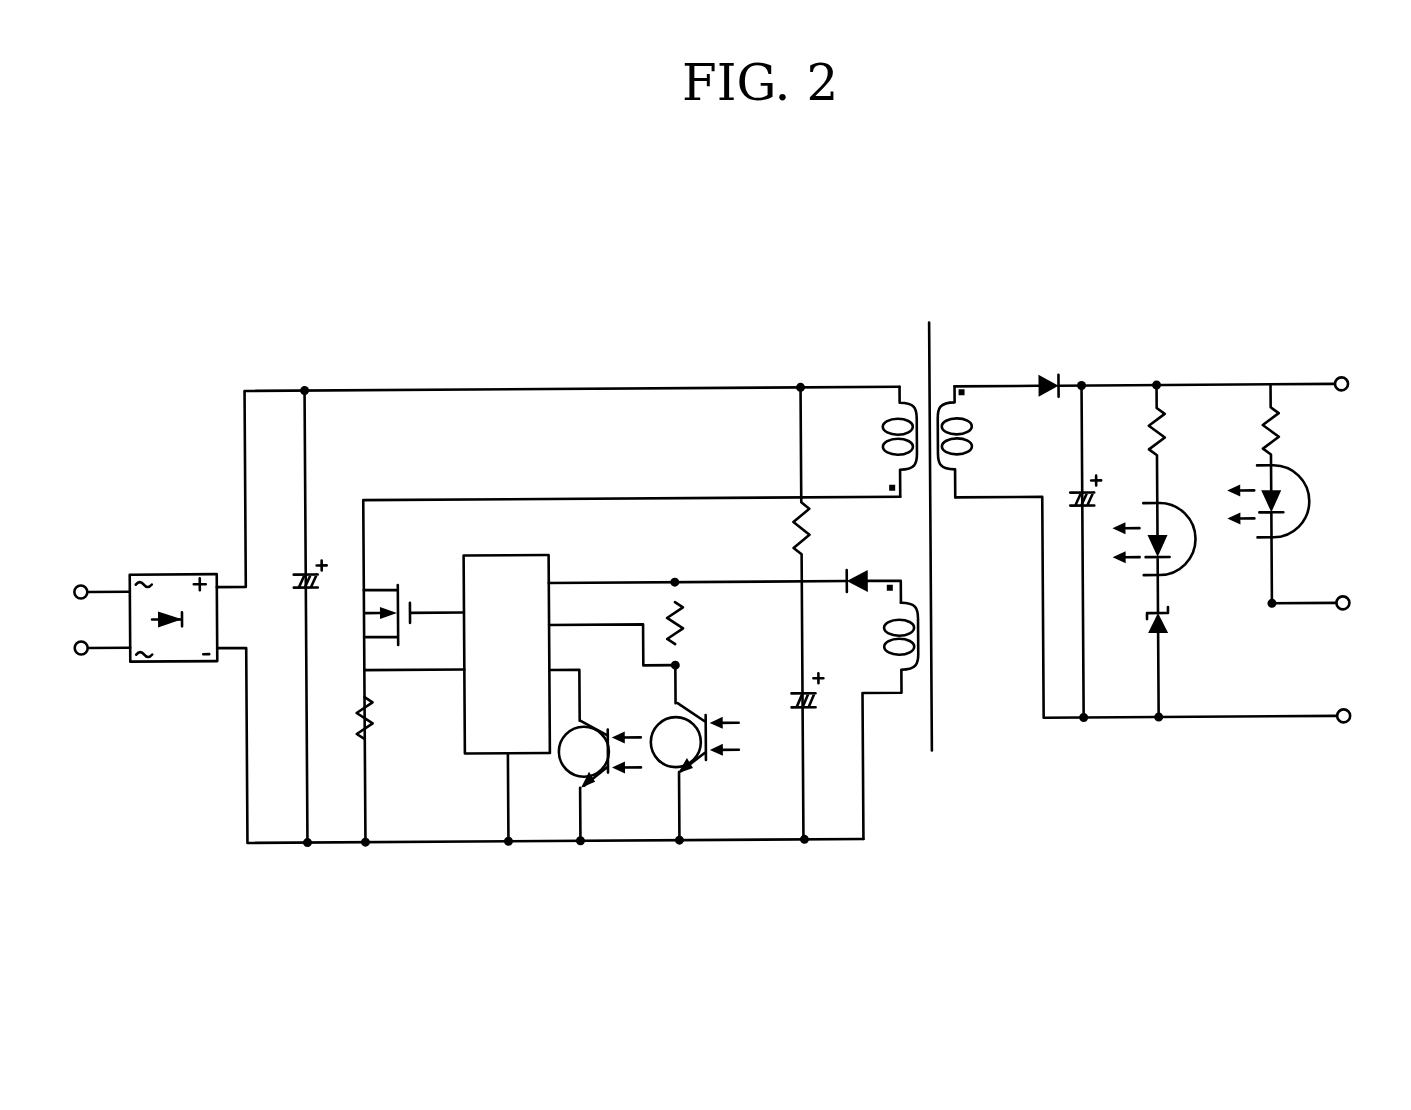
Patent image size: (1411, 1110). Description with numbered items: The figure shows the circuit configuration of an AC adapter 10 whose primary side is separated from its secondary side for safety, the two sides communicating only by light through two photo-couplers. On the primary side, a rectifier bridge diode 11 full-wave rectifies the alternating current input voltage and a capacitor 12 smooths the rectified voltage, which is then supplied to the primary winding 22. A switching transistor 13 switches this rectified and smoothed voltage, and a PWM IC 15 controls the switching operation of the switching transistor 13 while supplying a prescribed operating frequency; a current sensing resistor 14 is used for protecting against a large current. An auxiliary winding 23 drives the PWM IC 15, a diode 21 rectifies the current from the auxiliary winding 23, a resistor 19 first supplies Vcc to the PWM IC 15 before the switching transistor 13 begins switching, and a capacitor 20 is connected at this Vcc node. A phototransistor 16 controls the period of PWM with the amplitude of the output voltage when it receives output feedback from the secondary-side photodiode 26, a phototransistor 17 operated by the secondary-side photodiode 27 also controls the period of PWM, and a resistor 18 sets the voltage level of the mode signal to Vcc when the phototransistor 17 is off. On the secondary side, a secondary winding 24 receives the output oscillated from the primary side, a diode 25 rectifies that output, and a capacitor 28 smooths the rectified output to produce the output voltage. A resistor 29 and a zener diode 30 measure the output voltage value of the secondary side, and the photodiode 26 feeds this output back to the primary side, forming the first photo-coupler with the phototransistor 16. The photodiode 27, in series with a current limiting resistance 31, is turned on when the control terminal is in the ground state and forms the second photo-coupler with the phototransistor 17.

The AC adapter 10 is at (576, 323).
The rectifier bridge diode 11 is at (172, 659).
The capacitor 12 is at (290, 590).
The switching transistor 13 is at (375, 587).
The current sensing resistor 14 is at (381, 731).
The PWM IC 15 is at (510, 554).
The phototransistor 16 is at (590, 790).
The phototransistor 17 is at (694, 790).
The resistor 18 is at (692, 628).
The resistor 19 is at (792, 522).
The capacitor 20 is at (798, 692).
The diode 21 is at (860, 578).
The primary winding 22 is at (890, 355).
The auxiliary winding 23 is at (905, 716).
The secondary winding 24 is at (962, 337).
The diode 25 is at (1040, 378).
The photodiode 26 is at (1193, 566).
The photodiode 27 is at (1300, 531).
The capacitor 28 is at (1076, 491).
The resistor 29 is at (1172, 431).
The zener diode 30 is at (1163, 627).
The current limiting resistance 31 is at (1290, 442).